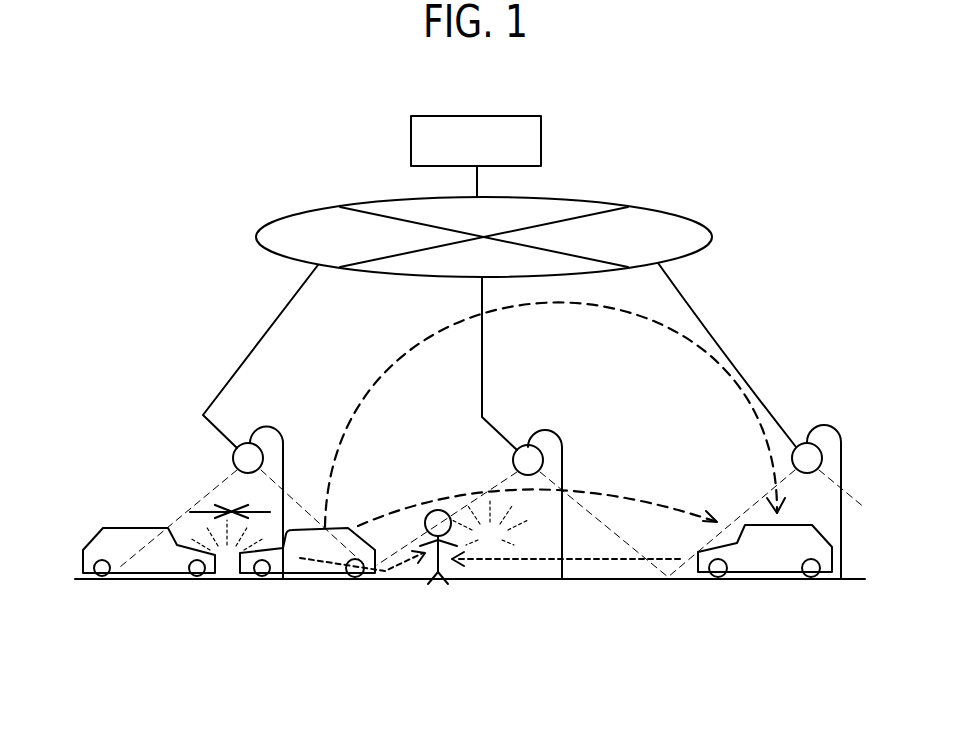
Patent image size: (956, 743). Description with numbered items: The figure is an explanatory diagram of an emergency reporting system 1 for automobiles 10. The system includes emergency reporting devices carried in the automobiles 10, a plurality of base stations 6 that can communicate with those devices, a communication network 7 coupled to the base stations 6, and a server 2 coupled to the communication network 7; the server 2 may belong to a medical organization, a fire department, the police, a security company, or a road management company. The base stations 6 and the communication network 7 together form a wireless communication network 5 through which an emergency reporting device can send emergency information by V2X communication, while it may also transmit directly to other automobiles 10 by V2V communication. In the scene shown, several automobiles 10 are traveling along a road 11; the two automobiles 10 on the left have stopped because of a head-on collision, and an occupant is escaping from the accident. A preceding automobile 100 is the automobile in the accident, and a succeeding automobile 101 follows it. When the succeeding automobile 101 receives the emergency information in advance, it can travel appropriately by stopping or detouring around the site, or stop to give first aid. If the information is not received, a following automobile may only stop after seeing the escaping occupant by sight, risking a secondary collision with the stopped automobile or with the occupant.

The emergency reporting system 1 is at (710, 178).
The server 2 is at (411, 143).
The wireless communication network 5 is at (173, 193).
The base station 6 is at (246, 443).
The communication network 7 is at (712, 237).
The automobile 10 is at (142, 578).
The preceding automobile 100 is at (300, 580).
The succeeding automobile 101 is at (755, 580).
The road 11 is at (613, 580).